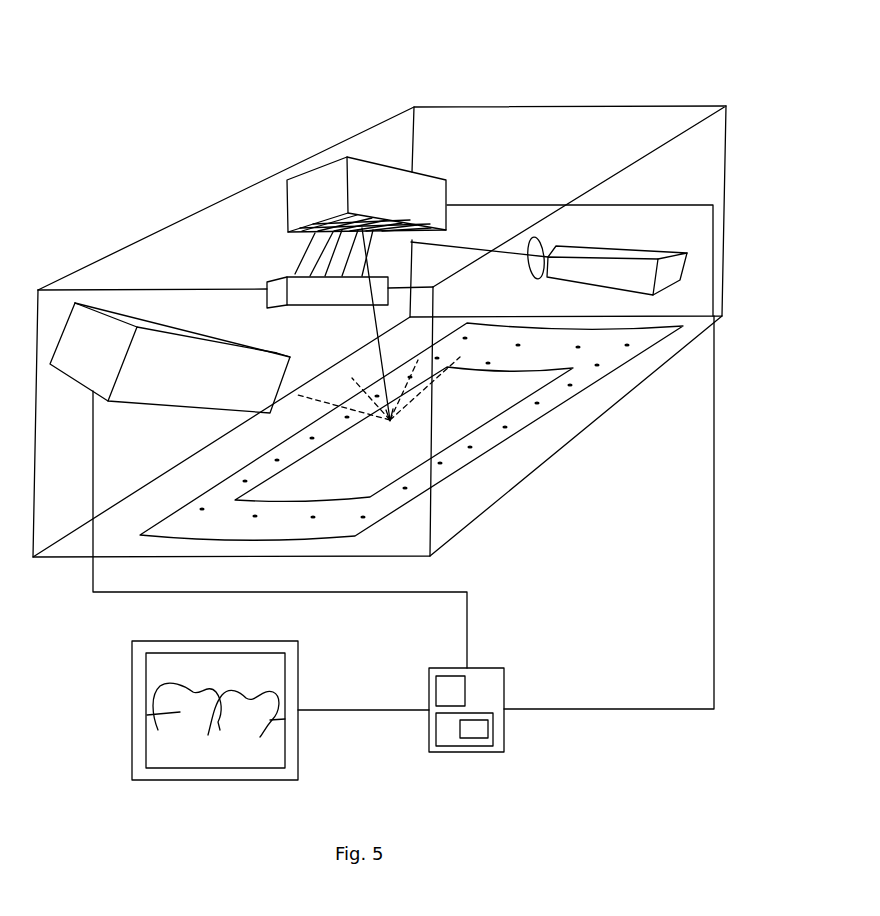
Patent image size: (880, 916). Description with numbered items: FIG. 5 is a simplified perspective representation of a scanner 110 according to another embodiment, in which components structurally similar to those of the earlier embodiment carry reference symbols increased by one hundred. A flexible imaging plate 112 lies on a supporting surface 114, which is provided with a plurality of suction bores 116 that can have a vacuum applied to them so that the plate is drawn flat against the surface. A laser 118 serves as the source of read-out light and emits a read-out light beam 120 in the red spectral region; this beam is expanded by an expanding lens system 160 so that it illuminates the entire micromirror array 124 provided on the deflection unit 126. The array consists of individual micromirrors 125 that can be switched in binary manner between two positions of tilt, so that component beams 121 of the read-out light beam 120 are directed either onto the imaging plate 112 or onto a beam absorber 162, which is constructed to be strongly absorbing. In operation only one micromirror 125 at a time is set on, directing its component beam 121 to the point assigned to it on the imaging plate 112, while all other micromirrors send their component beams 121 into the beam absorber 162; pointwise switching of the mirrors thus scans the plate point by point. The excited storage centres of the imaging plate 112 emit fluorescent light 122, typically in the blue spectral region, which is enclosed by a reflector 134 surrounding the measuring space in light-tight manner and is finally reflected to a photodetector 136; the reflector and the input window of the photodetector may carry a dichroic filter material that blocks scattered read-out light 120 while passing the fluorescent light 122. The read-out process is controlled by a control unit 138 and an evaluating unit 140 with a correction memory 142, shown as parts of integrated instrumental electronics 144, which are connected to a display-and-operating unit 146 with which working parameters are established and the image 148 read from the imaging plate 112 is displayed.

The scanner 110 is at (245, 162).
The imaging plate 112 is at (492, 407).
The supporting surface 114 is at (558, 397).
The suction bores 116 is at (628, 342).
The laser 118 is at (622, 248).
The read-out light beam 120 is at (466, 243).
The component beams 121 is at (297, 268).
The fluorescent light 122 is at (325, 400).
The micromirror array 124 is at (288, 231).
The micromirrors 125 is at (293, 272).
The deflection unit 126 is at (385, 183).
The reflector 134 is at (513, 107).
The photodetector 136 is at (172, 385).
The control unit 138 is at (443, 685).
The evaluating unit 140 is at (452, 735).
The correction memory 142 is at (485, 730).
The integrated instrumental electronics 144 is at (492, 690).
The display-and-operating unit 146 is at (207, 774).
The image 148 is at (147, 720).
The expanding lens system 160 is at (544, 240).
The beam absorber 162 is at (277, 283).